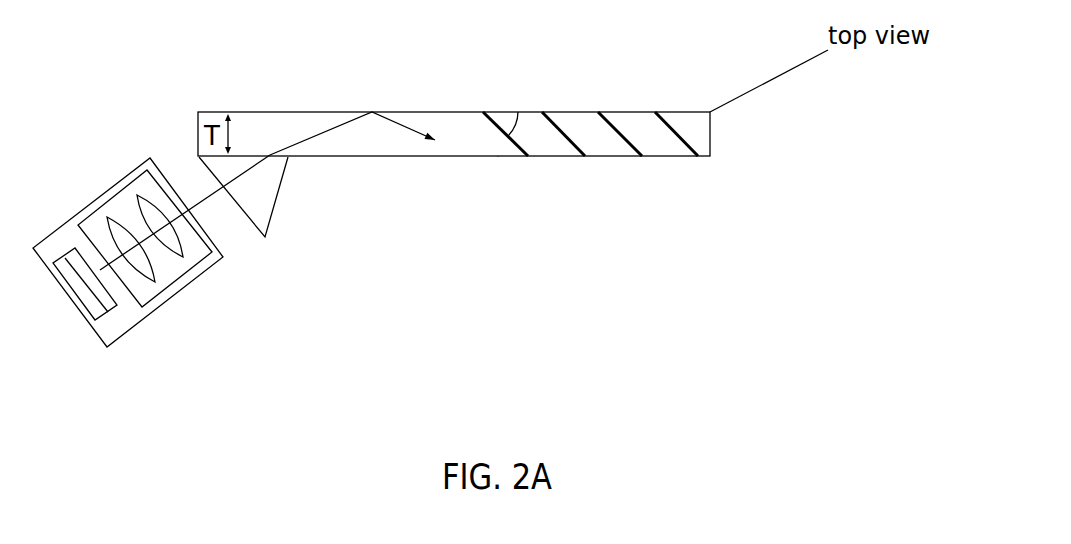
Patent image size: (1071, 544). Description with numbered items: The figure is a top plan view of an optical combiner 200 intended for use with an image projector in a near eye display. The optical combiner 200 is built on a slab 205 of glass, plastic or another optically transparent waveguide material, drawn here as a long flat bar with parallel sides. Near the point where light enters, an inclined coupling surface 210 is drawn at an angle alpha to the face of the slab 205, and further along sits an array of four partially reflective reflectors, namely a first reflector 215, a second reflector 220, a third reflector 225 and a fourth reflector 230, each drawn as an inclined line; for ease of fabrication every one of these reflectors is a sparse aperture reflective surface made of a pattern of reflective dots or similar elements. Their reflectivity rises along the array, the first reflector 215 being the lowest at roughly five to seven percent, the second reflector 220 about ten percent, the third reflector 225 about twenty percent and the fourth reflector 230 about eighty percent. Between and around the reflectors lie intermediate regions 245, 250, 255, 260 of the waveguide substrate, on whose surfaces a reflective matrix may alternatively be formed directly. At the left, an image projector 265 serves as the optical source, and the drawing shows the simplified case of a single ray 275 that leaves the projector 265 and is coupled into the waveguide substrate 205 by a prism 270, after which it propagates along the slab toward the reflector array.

The optical combiner 200 is at (325, 163).
The slab 205 is at (257, 107).
The first partially reflective mirror 210 is at (493, 103).
The first reflector 215 is at (498, 156).
The second reflector 220 is at (556, 156).
The third reflector 225 is at (613, 156).
The fourth reflector 230 is at (670, 156).
The intermediate region 245 is at (526, 112).
The intermediate region 250 is at (583, 112).
The intermediate region 255 is at (641, 112).
The intermediate region 260 is at (697, 112).
The image projector 265 is at (190, 297).
The prism 270 is at (223, 170).
The single ray 275 is at (337, 126).